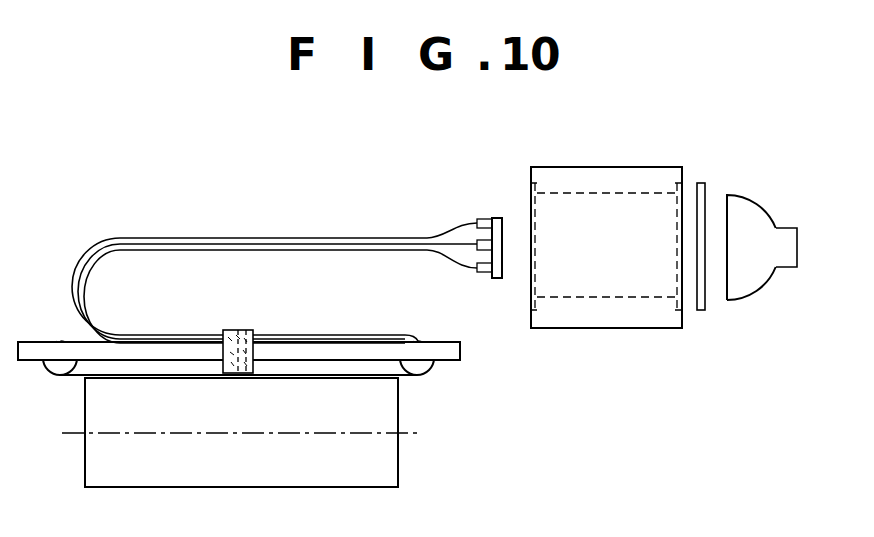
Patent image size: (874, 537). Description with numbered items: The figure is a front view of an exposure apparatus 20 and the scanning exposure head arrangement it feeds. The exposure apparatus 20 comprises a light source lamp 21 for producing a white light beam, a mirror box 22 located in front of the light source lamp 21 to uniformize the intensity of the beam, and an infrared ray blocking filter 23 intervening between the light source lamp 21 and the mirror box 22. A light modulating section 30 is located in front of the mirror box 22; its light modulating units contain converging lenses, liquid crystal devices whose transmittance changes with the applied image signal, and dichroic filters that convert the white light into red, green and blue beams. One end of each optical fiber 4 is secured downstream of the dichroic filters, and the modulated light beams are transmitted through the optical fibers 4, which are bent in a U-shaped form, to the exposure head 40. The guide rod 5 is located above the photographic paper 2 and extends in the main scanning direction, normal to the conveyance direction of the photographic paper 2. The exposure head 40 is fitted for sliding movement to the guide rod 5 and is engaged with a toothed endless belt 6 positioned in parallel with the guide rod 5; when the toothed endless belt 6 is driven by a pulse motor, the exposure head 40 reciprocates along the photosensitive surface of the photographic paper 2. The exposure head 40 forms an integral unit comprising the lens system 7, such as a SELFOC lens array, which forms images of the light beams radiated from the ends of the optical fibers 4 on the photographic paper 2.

The photographic paper 2 is at (341, 378).
The optical fiber 4 is at (320, 250).
The guide rod 5 is at (30, 348).
The toothed endless belt 6 is at (73, 376).
The lens system 7 is at (247, 373).
The exposure apparatus 20 is at (793, 150).
The light source lamp 21 is at (741, 285).
The mirror box 22 is at (613, 318).
The infrared ray blocking filter 23 is at (700, 312).
The light modulating section 30 is at (493, 296).
The exposure head 40 is at (250, 330).